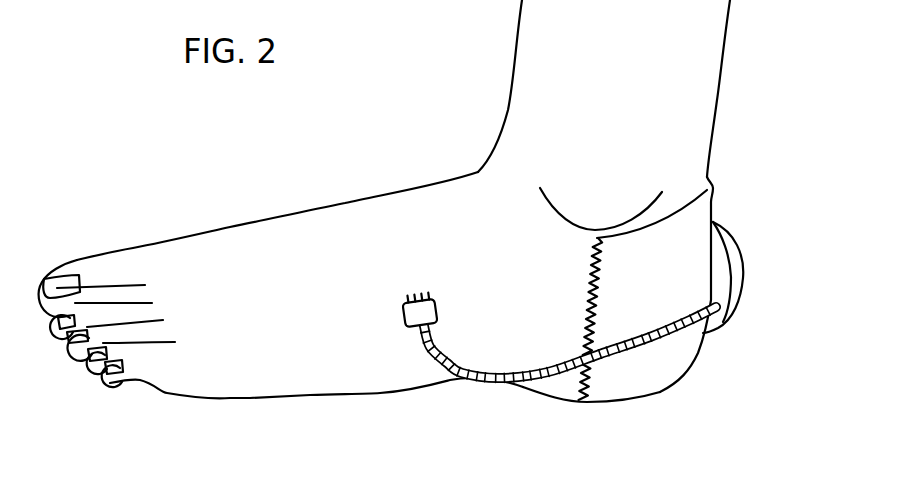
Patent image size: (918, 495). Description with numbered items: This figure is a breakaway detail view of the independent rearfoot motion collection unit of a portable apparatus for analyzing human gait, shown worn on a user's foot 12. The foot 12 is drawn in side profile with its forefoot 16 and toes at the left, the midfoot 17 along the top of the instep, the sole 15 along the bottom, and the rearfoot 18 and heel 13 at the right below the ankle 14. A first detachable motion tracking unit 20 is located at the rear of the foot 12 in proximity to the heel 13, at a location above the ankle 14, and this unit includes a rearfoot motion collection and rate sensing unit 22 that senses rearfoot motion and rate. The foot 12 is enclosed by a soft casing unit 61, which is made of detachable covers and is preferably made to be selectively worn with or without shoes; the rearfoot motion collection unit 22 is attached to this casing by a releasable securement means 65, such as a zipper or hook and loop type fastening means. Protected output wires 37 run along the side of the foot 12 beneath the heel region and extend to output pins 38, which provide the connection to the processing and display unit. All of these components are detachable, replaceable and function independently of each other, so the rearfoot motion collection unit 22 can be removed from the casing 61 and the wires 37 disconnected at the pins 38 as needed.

The foot 12 is at (395, 173).
The heel 13 is at (701, 357).
The ankle 14 is at (617, 201).
The sole 15 is at (318, 400).
The forefoot 16 is at (113, 268).
The midfoot 17 is at (363, 235).
The rearfoot 18 is at (657, 390).
The first detachable motion tracking unit 20 is at (765, 267).
The rearfoot motion collection and rate sensing unit 22 is at (738, 237).
The protected output wires 37 is at (552, 389).
The output pins 38 is at (401, 342).
The soft casing unit 61 is at (687, 215).
The releasable securement means 65 is at (725, 216).